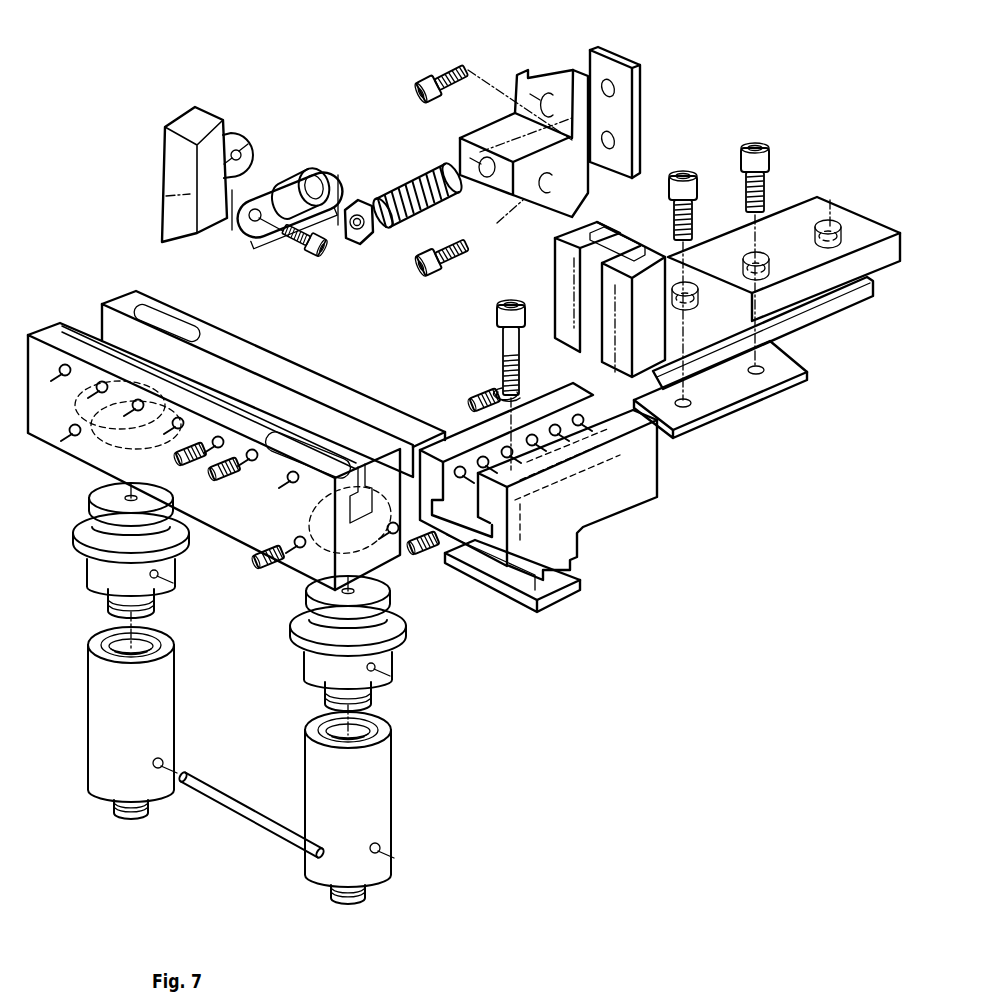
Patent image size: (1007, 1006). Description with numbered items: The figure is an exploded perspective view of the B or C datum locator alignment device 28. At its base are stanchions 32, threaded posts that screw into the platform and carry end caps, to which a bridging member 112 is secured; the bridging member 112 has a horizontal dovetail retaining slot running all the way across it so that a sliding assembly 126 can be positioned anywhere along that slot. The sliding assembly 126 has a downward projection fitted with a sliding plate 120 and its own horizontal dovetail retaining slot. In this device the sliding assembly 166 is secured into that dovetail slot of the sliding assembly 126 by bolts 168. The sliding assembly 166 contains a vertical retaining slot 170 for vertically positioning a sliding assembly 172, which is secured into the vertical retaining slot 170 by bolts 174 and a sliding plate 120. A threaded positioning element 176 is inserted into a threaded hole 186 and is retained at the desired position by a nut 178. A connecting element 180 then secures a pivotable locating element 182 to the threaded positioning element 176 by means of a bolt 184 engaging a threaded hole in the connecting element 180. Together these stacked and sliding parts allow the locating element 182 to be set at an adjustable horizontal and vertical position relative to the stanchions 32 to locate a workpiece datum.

The B or C datum locator alignment device 28 is at (597, 668).
The stanchion 32 is at (393, 788).
The bridging member 112 is at (310, 368).
The sliding plate 120 is at (613, 50).
The sliding assembly 126 is at (600, 520).
The sliding assembly 166 is at (810, 327).
The bolts 168 is at (747, 148).
The vertical retaining slot 170 is at (556, 262).
The sliding assembly 172 is at (548, 66).
The bolts 174 is at (417, 78).
The threaded positioning element 176 is at (423, 183).
The nut 178 is at (370, 240).
The connecting element 180 is at (294, 166).
The pivotable locating element 182 is at (187, 114).
The bolt 184 is at (317, 257).
The threaded hole 186 is at (462, 150).